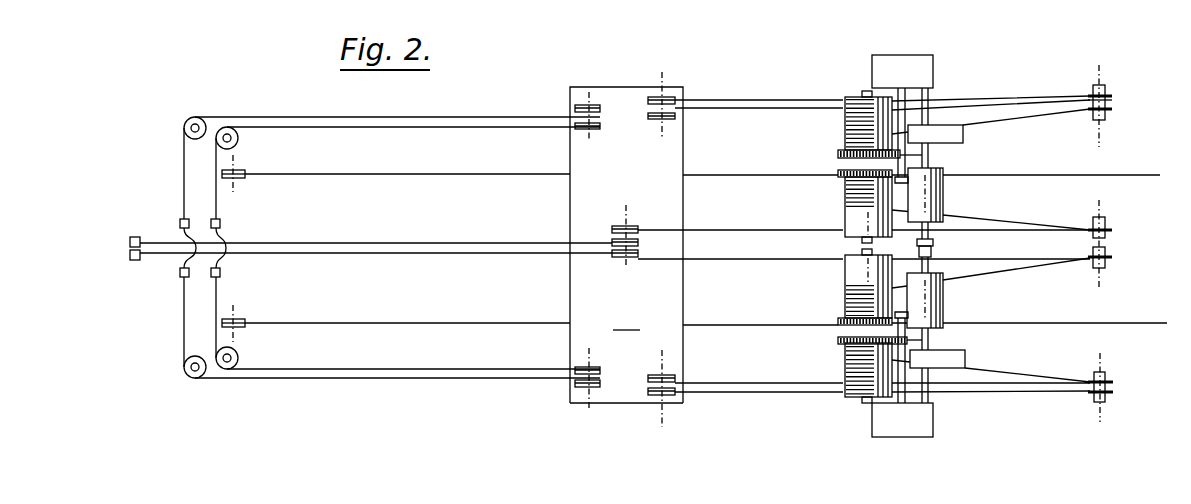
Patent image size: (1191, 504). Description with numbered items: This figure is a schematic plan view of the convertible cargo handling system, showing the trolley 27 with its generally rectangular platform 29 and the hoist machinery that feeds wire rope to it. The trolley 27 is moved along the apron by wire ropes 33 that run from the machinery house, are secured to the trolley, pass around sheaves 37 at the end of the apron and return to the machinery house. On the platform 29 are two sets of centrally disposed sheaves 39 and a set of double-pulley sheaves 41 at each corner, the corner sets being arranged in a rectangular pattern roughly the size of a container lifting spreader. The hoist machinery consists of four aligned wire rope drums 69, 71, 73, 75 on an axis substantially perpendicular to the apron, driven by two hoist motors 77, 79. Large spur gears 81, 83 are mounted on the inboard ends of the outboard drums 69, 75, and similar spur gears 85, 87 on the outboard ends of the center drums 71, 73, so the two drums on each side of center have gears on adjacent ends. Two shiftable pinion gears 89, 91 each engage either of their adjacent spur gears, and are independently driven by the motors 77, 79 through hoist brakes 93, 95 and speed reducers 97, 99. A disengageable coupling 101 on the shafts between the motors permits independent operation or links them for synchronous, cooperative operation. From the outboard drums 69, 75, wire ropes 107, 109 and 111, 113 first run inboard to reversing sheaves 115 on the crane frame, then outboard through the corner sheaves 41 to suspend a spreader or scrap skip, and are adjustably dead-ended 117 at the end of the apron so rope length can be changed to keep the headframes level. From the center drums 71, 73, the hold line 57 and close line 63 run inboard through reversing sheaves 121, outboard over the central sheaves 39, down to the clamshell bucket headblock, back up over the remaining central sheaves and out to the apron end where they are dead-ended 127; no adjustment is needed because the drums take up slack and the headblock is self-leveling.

The trolley 27 is at (605, 403).
The platform 29 is at (626, 249).
The wire ropes 33 is at (717, 175).
The sheaves 37 is at (245, 176).
The sets of sheaves 39 is at (626, 226).
The set of sheaves 41 is at (668, 100).
The reeving 57 is at (400, 243).
The reeving 63 is at (400, 253).
The wire rope drum 69 is at (845, 369).
The wire rope drum 71 is at (845, 272).
The wire rope drum 73 is at (845, 214).
The wire rope drum 75 is at (845, 131).
The hoist motor 77 is at (943, 297).
The hoist motor 79 is at (943, 197).
The spur gear 81 is at (838, 341).
The spur gear 83 is at (838, 155).
The spur gear 85 is at (838, 320).
The spur gear 87 is at (838, 177).
The shiftable pinion gear 89 is at (930, 341).
The shiftable pinion gear 91 is at (930, 157).
The hoist brake 93 is at (965, 357).
The hoist brake 95 is at (963, 133).
The speed reducer 97 is at (933, 422).
The speed reducer 99 is at (933, 68).
The disengageable coupling 101 is at (934, 246).
The wire rope 107 is at (727, 392).
The wire rope 109 is at (700, 383).
The wire rope 111 is at (758, 108).
The wire rope 113 is at (748, 100).
The reversing sheaves 115 is at (1105, 118).
The adjustable dead-end 117 is at (180, 275).
The reversing sheaves 121 is at (1105, 268).
The dead-end 127 is at (140, 237).